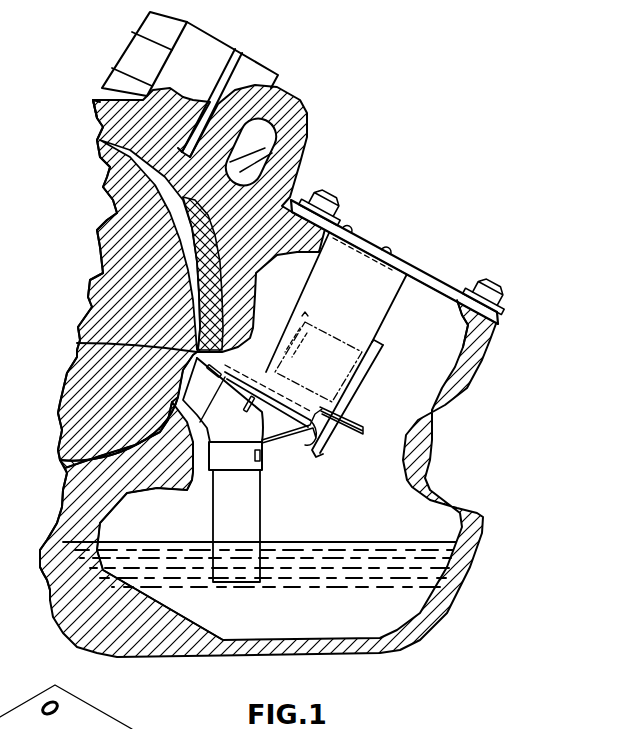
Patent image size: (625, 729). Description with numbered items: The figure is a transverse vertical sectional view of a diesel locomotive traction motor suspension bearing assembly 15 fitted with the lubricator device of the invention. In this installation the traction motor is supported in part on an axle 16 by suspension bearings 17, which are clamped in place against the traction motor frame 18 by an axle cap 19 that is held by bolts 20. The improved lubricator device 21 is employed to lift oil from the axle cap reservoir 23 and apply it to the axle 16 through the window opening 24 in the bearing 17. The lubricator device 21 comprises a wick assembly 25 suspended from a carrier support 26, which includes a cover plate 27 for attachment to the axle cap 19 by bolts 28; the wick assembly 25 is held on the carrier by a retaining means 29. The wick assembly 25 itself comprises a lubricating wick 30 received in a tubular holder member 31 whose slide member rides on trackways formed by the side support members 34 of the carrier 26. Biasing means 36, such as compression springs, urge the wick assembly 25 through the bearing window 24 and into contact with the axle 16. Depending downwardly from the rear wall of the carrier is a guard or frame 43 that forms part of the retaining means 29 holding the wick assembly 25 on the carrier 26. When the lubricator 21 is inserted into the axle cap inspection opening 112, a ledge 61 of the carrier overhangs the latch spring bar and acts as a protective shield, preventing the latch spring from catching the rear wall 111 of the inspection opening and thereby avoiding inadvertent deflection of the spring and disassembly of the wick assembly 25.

The traction motor suspension bearing assembly 15 is at (415, 118).
The axle 16 is at (100, 233).
The suspension bearing 17 is at (100, 153).
The traction motor frame 18 is at (96, 117).
The axle cap 19 is at (485, 512).
The bolt 20 is at (240, 62).
The lubricator device 21 is at (437, 260).
The axle cap reservoir 23 is at (353, 540).
The window opening 24 is at (190, 352).
The wick assembly 25 is at (197, 497).
The carrier support 26 is at (372, 340).
The cover plate 27 is at (363, 238).
The bolt 28 is at (320, 201).
The retaining means 29 is at (357, 405).
The wick 30 is at (247, 530).
The holder member 31 is at (263, 469).
The side support member 34 is at (357, 283).
The biasing means 36 is at (313, 328).
The guard 43 is at (318, 455).
The ledge 61 is at (362, 419).
The rear wall 111 is at (463, 343).
The inspection opening 112 is at (460, 314).